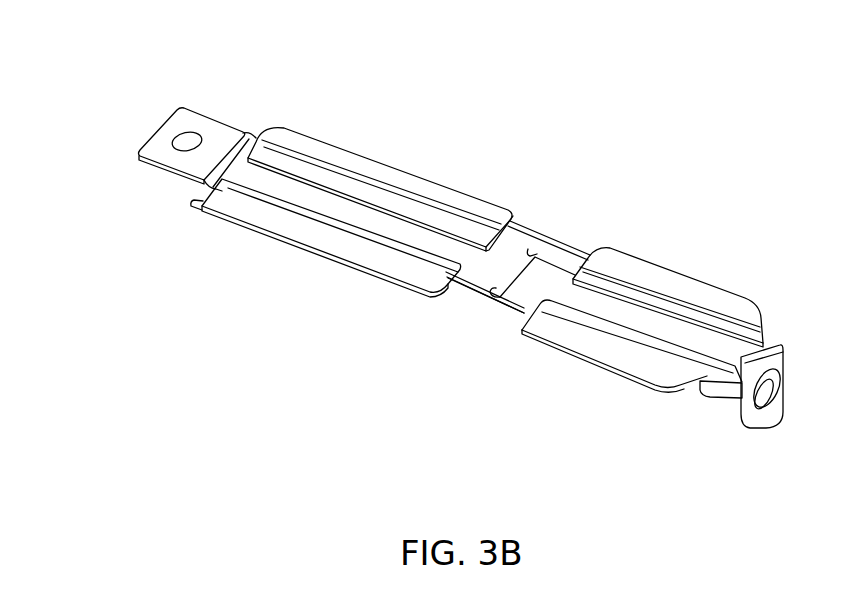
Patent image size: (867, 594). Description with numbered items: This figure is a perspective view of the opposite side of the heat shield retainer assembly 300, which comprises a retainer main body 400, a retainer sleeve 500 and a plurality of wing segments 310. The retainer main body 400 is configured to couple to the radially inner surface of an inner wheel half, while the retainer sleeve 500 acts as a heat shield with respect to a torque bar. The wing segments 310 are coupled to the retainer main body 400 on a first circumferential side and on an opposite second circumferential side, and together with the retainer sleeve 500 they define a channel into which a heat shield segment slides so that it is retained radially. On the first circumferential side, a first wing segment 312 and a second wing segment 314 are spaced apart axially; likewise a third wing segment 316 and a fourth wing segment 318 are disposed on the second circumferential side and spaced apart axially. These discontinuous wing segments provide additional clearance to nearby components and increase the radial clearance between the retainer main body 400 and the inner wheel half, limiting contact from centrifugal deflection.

The heat shield retainer assembly 300 is at (138, 95).
The plurality of wing segments 310 is at (268, 234).
The first wing segment 312 is at (331, 243).
The second wing segment 314 is at (608, 345).
The third wing segment 316 is at (388, 187).
The fourth wing segment 318 is at (662, 290).
The retainer main body 400 is at (499, 253).
The retainer sleeve 500 is at (466, 300).